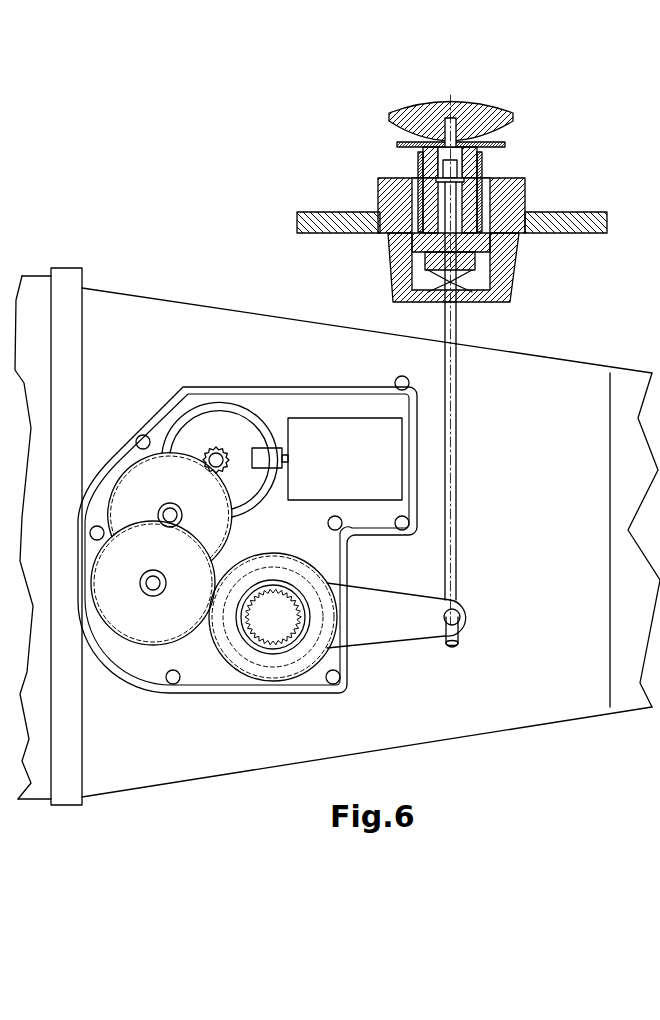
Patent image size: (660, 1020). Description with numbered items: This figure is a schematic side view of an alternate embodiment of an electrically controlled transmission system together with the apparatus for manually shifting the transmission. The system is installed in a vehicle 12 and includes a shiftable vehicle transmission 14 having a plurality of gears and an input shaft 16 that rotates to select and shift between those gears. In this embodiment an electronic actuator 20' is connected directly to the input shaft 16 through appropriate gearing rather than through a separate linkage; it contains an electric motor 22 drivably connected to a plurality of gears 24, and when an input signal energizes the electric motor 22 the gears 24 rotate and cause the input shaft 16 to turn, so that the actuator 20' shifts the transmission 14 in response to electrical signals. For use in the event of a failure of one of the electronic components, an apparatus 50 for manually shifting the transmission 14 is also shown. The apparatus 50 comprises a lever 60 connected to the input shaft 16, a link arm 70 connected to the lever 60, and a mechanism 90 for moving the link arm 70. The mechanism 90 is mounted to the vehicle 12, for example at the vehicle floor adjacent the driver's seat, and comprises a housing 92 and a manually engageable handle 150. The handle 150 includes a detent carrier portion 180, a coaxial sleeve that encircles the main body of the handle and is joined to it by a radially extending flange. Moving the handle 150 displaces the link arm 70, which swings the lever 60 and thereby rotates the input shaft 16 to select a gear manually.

The vehicle 12 is at (575, 211).
The shiftable vehicle transmission 14 is at (166, 290).
The input shaft 16 is at (272, 628).
The electronic actuator 20' is at (247, 512).
The electric motor 22 is at (331, 447).
The gears 24 is at (132, 622).
The apparatus for manually shifting the transmission 50 is at (345, 162).
The lever 60 is at (387, 645).
The link arm 70 is at (460, 327).
The mechanism for moving the link arm 90 is at (530, 160).
The housing 92 is at (514, 275).
The manually engageable handle 150 is at (482, 102).
The detent carrier portion 180 is at (507, 142).